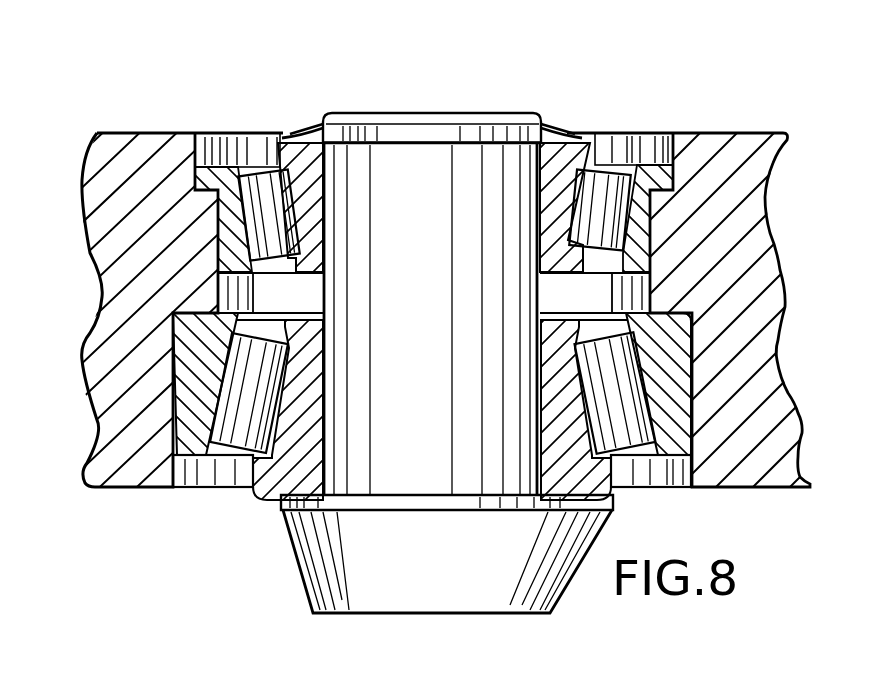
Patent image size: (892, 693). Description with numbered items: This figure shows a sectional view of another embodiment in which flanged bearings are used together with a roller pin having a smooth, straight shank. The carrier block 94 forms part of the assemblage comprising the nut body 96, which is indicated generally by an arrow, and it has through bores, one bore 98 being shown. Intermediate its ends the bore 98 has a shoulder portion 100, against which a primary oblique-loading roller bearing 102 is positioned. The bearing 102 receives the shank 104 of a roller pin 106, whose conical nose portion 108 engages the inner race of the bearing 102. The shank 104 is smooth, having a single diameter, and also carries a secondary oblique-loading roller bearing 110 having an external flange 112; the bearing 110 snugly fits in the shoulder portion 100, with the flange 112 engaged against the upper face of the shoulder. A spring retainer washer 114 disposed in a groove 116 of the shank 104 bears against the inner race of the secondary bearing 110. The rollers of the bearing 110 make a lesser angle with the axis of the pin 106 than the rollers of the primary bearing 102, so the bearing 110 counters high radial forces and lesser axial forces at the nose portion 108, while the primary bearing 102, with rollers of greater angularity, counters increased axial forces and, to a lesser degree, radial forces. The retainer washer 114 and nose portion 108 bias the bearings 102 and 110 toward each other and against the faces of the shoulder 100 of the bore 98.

The carrier block 94 is at (446, 301).
The nut body 96 is at (443, 299).
The bore 98 is at (443, 312).
The shoulder portion 100 is at (667, 247).
The primary oblique-loading roller bearing 102 is at (273, 483).
The shank 104 is at (447, 349).
The roller pin 106 is at (435, 84).
The conical nose portion 108 is at (410, 575).
The secondary oblique-loading roller bearing 110 is at (279, 131).
The external flange 112 is at (193, 168).
The spring retainer washer 114 is at (550, 130).
The groove 116 is at (393, 130).